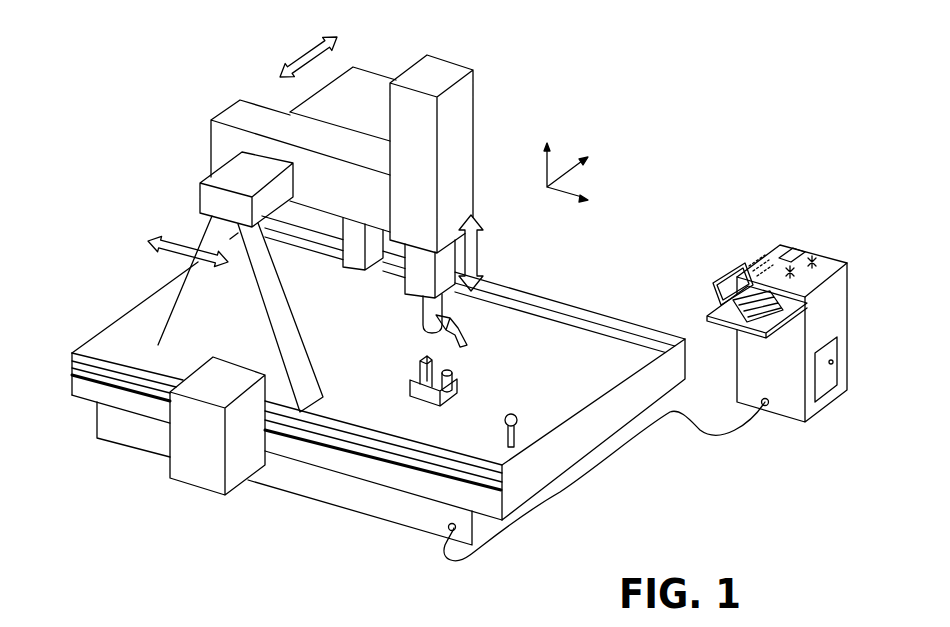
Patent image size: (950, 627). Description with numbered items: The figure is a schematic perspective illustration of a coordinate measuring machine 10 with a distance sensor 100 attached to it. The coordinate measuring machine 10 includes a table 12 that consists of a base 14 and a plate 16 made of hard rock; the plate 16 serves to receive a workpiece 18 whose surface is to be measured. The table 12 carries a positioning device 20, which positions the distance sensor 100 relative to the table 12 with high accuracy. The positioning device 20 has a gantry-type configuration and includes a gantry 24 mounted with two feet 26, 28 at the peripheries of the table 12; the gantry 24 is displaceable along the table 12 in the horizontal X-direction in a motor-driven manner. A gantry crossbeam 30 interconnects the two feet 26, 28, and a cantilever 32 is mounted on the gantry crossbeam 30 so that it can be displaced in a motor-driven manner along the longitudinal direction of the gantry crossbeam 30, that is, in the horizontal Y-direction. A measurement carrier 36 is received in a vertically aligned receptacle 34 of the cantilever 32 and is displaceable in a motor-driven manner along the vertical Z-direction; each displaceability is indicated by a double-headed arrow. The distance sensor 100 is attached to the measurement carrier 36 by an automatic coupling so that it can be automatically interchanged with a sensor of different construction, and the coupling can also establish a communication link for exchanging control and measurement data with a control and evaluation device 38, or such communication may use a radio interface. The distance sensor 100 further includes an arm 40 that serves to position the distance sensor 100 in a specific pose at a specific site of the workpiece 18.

The coordinate measuring machine 10 is at (684, 133).
The table 12 is at (110, 307).
The base 14 is at (374, 497).
The plate 16 is at (610, 323).
The workpiece 18 is at (450, 400).
The positioning device 20 is at (168, 125).
The gantry 24 is at (193, 193).
The foot 26 is at (285, 323).
The foot 28 is at (345, 258).
The gantry crossbeam 30 is at (367, 78).
The cantilever 32 is at (248, 110).
The receptacle 34 is at (468, 97).
The measurement carrier 36 is at (420, 283).
The control and evaluation device 38 is at (847, 250).
The arm 40 is at (463, 310).
The distance sensor 100 is at (472, 326).